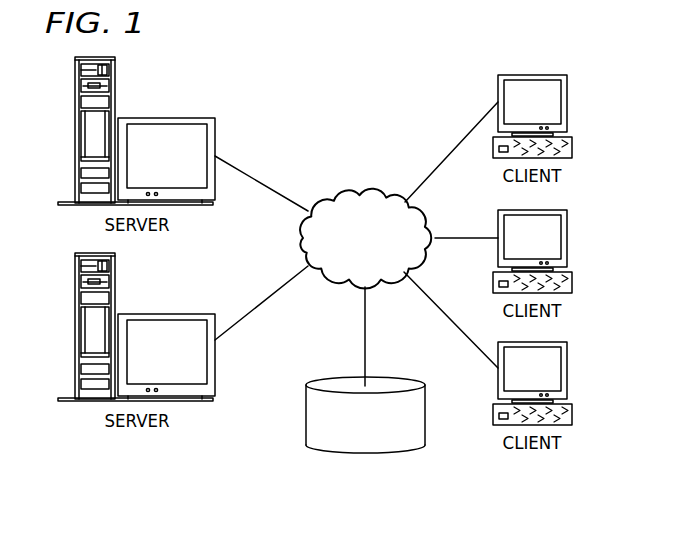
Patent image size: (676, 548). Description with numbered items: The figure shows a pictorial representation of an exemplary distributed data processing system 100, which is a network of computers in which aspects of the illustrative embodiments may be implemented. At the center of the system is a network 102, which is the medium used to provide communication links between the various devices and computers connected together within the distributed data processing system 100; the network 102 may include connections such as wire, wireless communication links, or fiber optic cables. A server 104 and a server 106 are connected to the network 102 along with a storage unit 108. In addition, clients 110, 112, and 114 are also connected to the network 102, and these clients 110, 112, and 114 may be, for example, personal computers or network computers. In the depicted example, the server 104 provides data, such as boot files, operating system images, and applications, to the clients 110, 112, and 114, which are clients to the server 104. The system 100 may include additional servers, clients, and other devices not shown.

The distributed data processing system 100 is at (416, 81).
The network 102 is at (337, 190).
The server 104 is at (75, 132).
The server 106 is at (75, 328).
The storage unit 108 is at (350, 455).
The client 110 is at (569, 103).
The client 112 is at (570, 245).
The client 114 is at (569, 370).